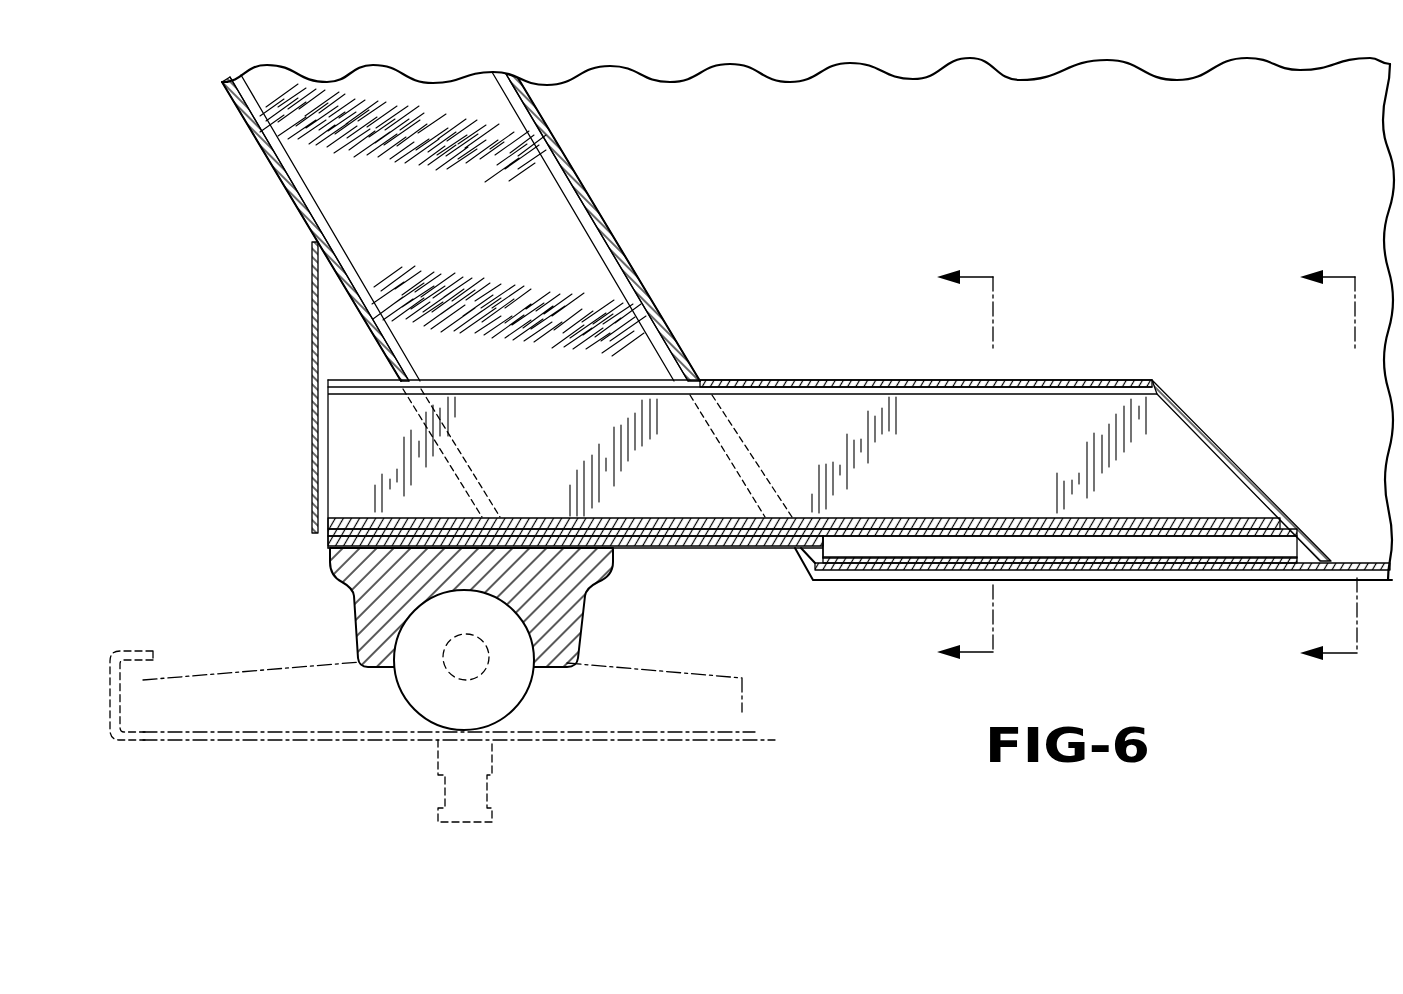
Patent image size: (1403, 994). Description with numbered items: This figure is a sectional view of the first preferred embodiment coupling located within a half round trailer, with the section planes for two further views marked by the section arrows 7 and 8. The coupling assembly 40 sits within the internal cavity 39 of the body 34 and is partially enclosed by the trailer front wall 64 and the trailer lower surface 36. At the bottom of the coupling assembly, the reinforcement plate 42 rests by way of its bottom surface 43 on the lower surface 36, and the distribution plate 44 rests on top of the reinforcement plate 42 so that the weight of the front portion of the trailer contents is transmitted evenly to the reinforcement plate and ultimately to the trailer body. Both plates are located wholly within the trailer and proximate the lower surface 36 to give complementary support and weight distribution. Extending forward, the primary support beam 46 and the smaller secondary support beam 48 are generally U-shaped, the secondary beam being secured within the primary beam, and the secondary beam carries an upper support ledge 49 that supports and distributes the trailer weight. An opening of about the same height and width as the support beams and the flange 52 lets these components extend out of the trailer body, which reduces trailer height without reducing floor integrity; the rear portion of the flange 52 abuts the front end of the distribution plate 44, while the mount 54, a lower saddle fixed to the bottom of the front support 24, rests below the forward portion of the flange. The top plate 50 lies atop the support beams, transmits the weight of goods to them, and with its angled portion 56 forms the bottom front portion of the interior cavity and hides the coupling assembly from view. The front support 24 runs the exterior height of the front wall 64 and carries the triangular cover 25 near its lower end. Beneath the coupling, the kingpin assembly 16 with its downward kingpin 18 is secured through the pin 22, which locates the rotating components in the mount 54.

The kingpin assembly 16 is at (247, 741).
The kingpin 18 is at (442, 787).
The pin 22 is at (473, 667).
The front support 24 is at (296, 207).
The triangularly shaped flange or cover 25 is at (312, 352).
The body 34 is at (921, 128).
The lower surface 36 is at (1353, 561).
The internal cavity 39 is at (1027, 160).
The coupling assembly 40 is at (1093, 484).
The reinforcement plate 42 is at (1091, 566).
The bottom surface 43 is at (1162, 565).
The distribution plate 44 is at (1218, 546).
The primary support beam 46 is at (722, 536).
The secondary support beam 48 is at (360, 467).
The upper support ledge 49 is at (531, 380).
The top plate 50 is at (845, 380).
The flange 52 is at (553, 548).
The mount 54 is at (365, 607).
The angled portion 56 is at (1234, 462).
The trailer front wall 64 is at (620, 250).
The section line 7 is at (956, 465).
The section line 8 is at (1318, 466).